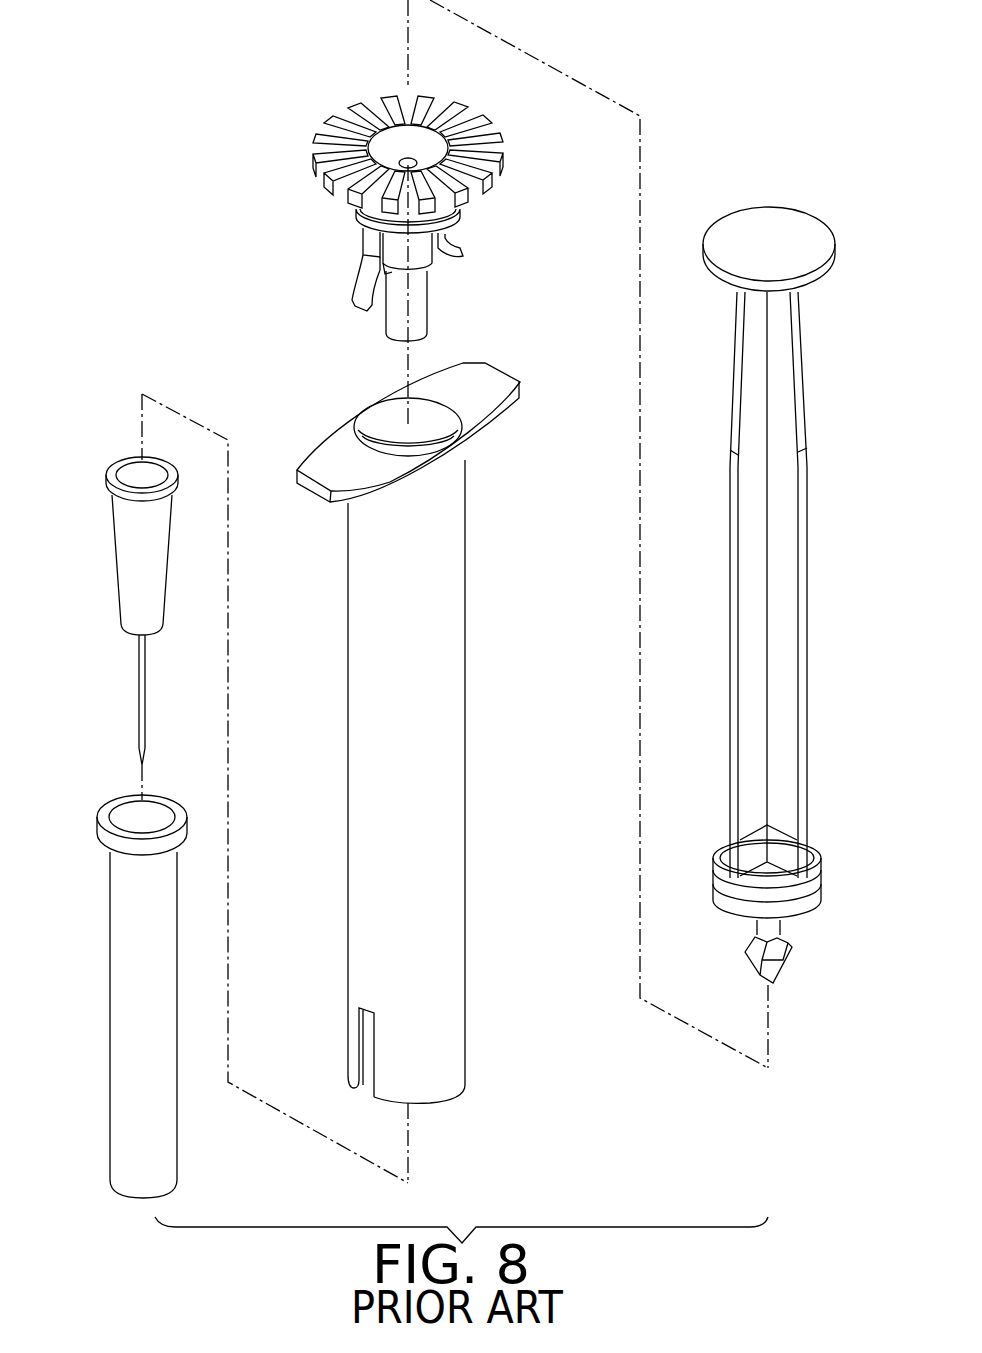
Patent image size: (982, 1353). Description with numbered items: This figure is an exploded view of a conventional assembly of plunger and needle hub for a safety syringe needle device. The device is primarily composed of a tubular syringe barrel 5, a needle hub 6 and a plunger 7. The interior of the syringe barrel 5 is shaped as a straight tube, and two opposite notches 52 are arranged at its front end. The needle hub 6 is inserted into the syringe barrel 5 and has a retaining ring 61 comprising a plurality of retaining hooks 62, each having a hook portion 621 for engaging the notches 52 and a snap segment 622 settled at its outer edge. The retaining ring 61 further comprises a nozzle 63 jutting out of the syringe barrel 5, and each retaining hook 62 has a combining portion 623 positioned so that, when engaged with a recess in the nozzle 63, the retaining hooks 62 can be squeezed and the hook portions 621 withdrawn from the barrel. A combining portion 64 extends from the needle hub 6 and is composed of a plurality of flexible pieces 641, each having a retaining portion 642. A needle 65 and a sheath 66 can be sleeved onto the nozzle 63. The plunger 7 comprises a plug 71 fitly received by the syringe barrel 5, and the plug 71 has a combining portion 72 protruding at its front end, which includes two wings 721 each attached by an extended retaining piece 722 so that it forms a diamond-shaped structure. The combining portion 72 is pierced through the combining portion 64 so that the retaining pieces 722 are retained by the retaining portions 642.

The syringe barrel 5 is at (410, 733).
The notches 52 is at (368, 1055).
The needle hub 6 is at (413, 172).
The retaining ring 61 is at (453, 211).
The retaining hooks 62 is at (383, 253).
The hook portion 621 is at (363, 256).
The snap segment 622 is at (352, 290).
The combining portion 623 is at (392, 273).
The nozzle 63 is at (425, 312).
The combining portion 64 is at (451, 136).
The flexible pieces 641 is at (493, 167).
The retaining portion 642 is at (487, 147).
The needle 65 is at (123, 548).
The sheath 66 is at (110, 908).
The plunger 7 is at (777, 608).
The plug 71 is at (822, 890).
The combining portion 72 is at (763, 957).
The wings 721 is at (752, 975).
The retaining piece 722 is at (755, 948).